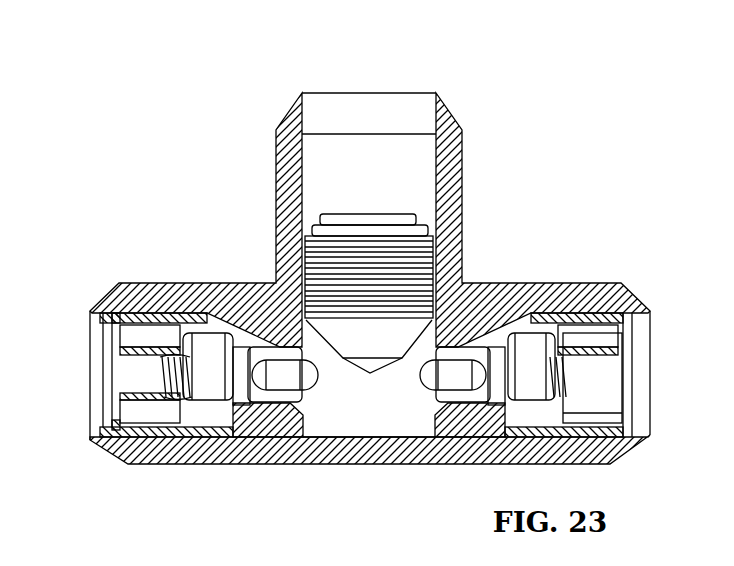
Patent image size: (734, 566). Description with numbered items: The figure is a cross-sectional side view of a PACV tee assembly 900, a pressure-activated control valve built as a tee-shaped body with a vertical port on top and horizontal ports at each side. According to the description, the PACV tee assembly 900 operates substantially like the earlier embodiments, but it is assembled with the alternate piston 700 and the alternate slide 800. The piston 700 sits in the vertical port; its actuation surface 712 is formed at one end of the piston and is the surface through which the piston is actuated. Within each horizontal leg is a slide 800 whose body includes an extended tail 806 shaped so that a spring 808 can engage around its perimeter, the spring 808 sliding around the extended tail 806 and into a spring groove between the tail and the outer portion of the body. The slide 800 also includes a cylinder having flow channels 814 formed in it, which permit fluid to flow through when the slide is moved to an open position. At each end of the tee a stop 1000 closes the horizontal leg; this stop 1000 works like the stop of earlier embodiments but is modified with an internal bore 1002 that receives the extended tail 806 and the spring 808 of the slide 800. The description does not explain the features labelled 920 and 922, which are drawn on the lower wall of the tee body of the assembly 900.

The PACV tee assembly 900 is at (494, 96).
The piston 700 is at (367, 235).
The actuation surface 712 is at (217, 333).
The stop 1000 is at (148, 332).
The internal bore 1002 is at (137, 356).
The extended tail 806 is at (140, 400).
The spring 808 is at (168, 398).
The flow channels 814 is at (462, 368).
The slide 800 is at (527, 355).
The bottom wall 920 is at (307, 436).
The inner bore surface 922 is at (322, 438).